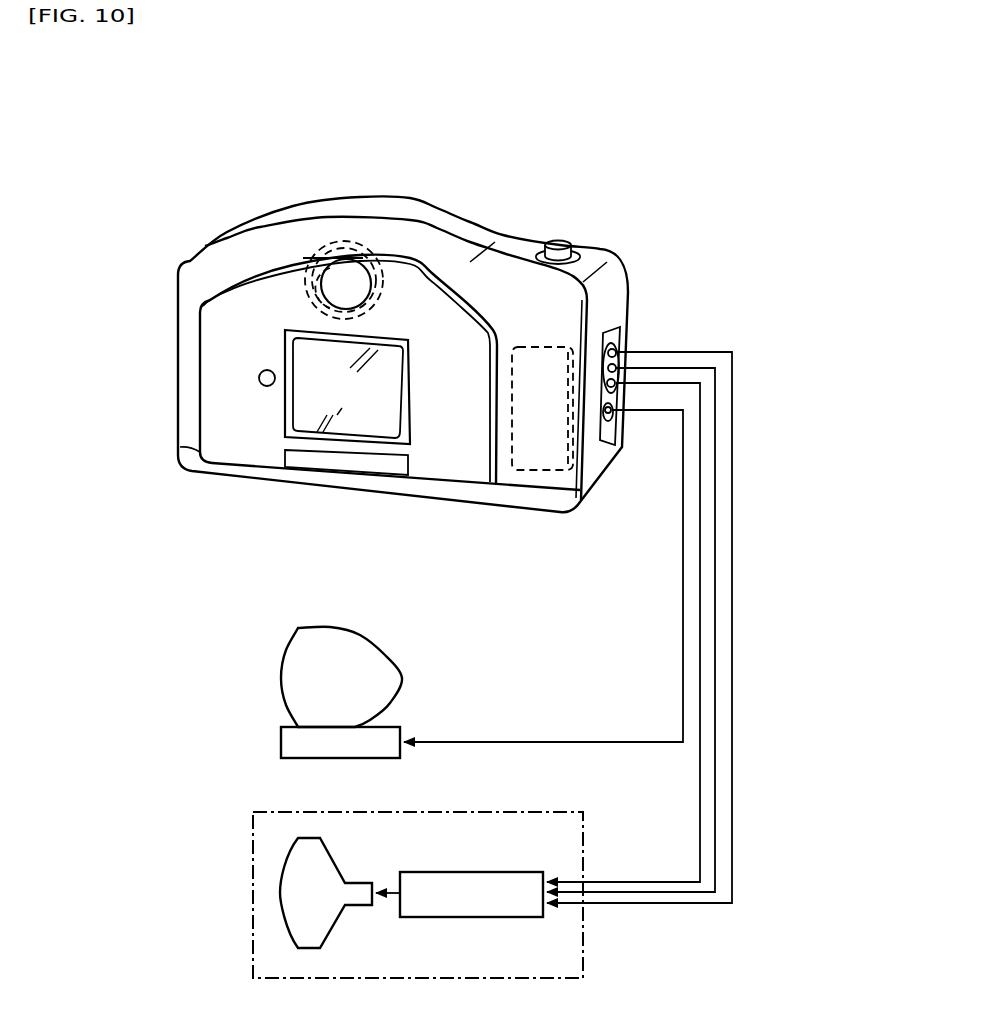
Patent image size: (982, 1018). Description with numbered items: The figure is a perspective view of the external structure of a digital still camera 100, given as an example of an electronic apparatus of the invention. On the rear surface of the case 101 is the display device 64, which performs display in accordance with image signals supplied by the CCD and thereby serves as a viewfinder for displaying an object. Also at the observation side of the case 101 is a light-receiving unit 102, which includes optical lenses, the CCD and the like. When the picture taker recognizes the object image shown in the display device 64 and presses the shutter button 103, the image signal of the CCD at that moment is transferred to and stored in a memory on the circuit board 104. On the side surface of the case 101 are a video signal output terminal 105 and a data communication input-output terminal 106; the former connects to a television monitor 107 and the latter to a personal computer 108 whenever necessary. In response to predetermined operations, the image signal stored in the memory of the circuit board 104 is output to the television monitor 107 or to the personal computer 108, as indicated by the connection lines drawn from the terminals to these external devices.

The digital still camera 100 is at (465, 160).
The case 101 is at (193, 323).
The light-receiving unit 102 is at (366, 250).
The shutter button 103 is at (559, 240).
The display device 64 is at (377, 420).
The circuit board 104 is at (537, 453).
The video signal output terminal 105 is at (617, 335).
The data communication input-output terminal 106 is at (611, 418).
The television monitor 107 is at (252, 850).
The personal computer 108 is at (281, 643).